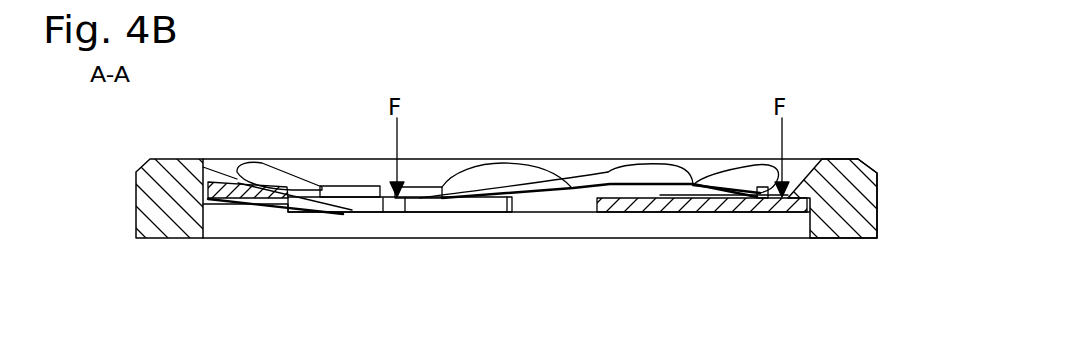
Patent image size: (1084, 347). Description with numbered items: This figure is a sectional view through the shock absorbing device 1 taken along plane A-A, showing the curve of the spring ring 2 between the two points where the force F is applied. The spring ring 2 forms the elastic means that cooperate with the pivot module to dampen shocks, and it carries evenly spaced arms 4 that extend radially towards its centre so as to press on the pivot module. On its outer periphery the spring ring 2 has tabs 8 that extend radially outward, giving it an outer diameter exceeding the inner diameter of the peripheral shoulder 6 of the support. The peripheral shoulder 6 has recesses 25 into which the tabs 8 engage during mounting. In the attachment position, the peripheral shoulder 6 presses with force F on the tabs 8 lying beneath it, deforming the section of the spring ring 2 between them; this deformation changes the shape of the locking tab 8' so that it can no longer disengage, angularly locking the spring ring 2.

The shock absorbing device 1 is at (920, 126).
The spring ring 2 is at (340, 224).
The arms 4 is at (470, 207).
The peripheral shoulder 6 is at (798, 158).
The tabs 8 is at (481, 152).
The locking tab 8' is at (275, 246).
The recesses 25 is at (256, 170).